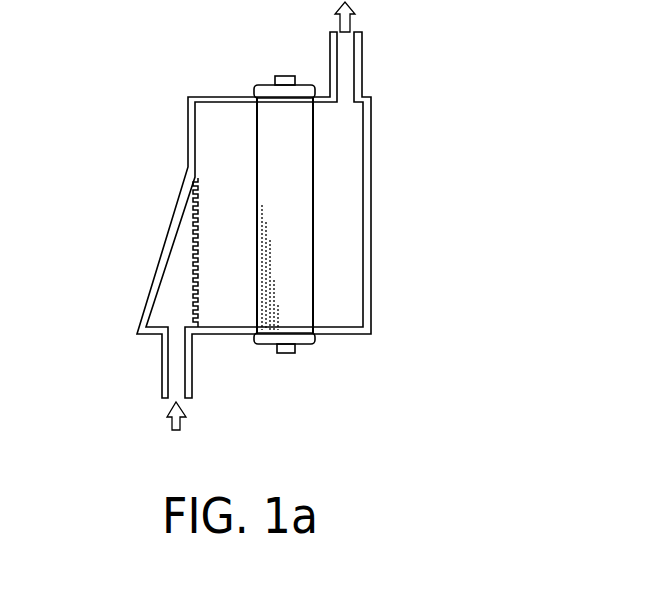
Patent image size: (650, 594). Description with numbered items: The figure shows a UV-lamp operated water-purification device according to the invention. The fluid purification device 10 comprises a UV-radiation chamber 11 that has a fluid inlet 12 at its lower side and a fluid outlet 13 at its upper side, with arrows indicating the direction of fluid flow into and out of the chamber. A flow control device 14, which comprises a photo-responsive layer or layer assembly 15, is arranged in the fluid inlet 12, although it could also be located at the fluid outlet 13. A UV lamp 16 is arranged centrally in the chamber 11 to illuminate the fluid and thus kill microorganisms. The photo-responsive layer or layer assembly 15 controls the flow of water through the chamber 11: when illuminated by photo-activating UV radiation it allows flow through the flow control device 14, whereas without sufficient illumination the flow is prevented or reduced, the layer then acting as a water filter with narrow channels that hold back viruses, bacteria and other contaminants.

The fluid purification device 10 is at (286, 223).
The UV-radiation chamber 11 is at (220, 134).
The fluid inlet 12 is at (168, 421).
The fluid outlet 13 is at (350, 22).
The flow control device 14 is at (112, 252).
The photo-responsive layer or layer assembly 15 is at (193, 247).
The UV lamp 16 is at (285, 190).